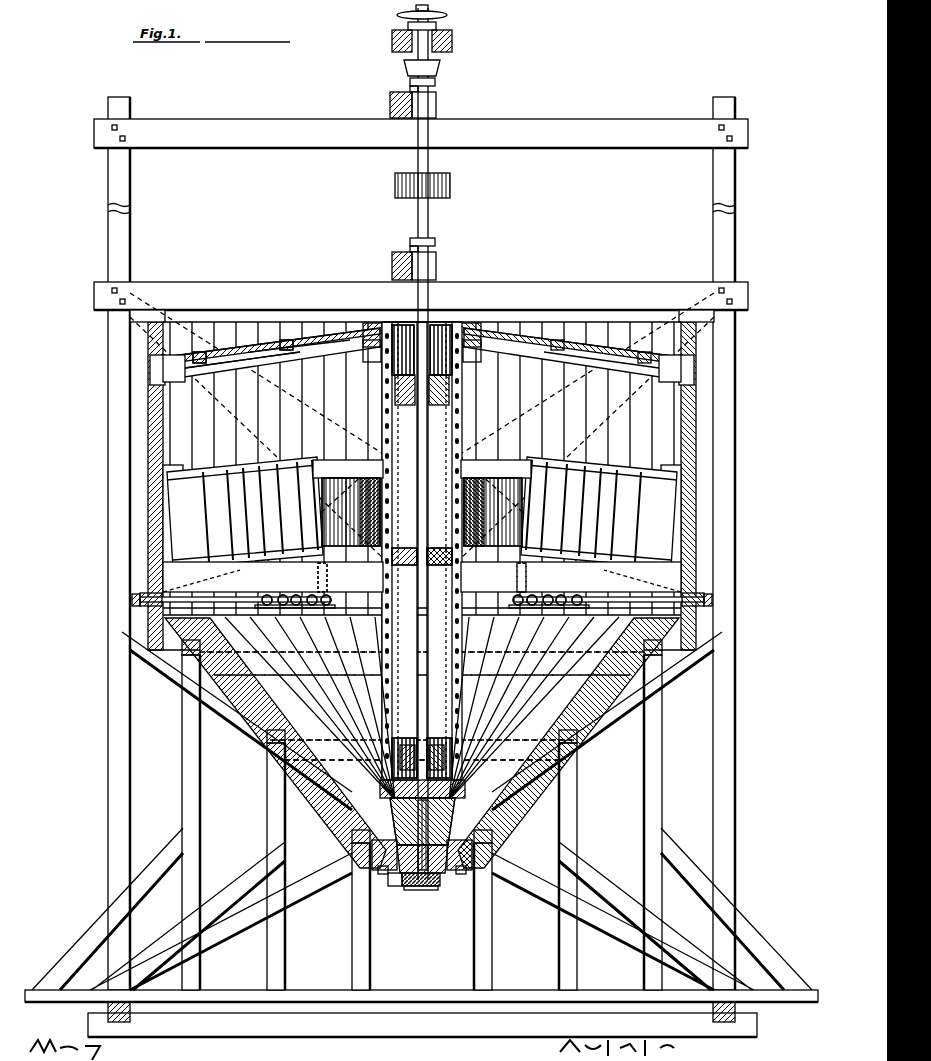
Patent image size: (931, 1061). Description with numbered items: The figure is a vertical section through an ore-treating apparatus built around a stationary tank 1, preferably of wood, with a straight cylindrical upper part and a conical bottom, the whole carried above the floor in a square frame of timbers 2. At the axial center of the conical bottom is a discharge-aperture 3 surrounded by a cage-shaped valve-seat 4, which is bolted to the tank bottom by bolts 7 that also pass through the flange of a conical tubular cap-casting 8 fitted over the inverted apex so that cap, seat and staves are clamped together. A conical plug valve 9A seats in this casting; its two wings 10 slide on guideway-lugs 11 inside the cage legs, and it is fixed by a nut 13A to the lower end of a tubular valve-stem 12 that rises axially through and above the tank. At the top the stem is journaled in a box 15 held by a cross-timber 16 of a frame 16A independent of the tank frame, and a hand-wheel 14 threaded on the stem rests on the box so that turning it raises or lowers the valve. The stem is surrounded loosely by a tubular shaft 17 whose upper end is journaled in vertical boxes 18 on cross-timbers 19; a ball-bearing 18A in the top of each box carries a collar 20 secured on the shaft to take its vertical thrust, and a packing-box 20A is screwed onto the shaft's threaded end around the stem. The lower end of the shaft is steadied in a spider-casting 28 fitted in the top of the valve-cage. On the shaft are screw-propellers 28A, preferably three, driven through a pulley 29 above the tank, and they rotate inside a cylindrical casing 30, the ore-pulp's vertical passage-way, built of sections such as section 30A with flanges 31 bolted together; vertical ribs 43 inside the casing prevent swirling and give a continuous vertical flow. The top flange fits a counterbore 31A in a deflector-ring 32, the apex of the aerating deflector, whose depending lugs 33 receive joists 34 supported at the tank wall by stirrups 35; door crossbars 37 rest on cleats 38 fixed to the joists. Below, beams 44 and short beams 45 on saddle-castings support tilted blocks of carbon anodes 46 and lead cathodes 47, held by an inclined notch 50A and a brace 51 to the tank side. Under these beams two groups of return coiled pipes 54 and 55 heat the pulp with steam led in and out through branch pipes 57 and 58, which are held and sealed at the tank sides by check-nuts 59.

The stationary tank 1 is at (700, 517).
The frame of timbers 2 is at (650, 807).
The discharge-aperture 3 is at (393, 886).
The valve-seat 4 is at (470, 840).
The bolts 7 is at (383, 874).
The conical tubular cap-casting 8 is at (372, 858).
The valve 9A is at (425, 886).
The wings 10 is at (392, 812).
The guideway-lugs 11 is at (395, 825).
The valve-stem 12 is at (416, 797).
The nut 13A is at (418, 890).
The hand-wheel 14 is at (447, 15).
The box 15 is at (408, 27).
The cross-timber 16 is at (392, 45).
The frame 16A is at (584, 124).
The tubular shaft 17 is at (428, 297).
The boxes 18 is at (436, 102).
The ball-bearing 18A is at (410, 249).
The cross-timbers 19 is at (390, 102).
The collar 20 is at (435, 82).
The packing-box 20A is at (440, 70).
The spider-casting 28 is at (300, 770).
The screw-propellers 28A is at (455, 380).
The pulley 29 is at (450, 186).
The cylindrical casing 30 is at (385, 373).
The cylindrical section 30A is at (382, 630).
The flanges 31 is at (378, 328).
The counterbore 31A is at (492, 325).
The deflector-ring 32 is at (335, 328).
The depending lugs 33 is at (582, 326).
The joists 34 is at (322, 352).
The stirrups 35 is at (163, 362).
The depending crossbars 37 is at (200, 365).
The cleats 38 is at (255, 365).
The ribs 43 is at (422, 551).
The beams 44 is at (422, 577).
The short beams 45 is at (318, 577).
The anodes 46 is at (280, 468).
The cathodes 47 is at (215, 470).
The inclined notch 50A is at (422, 580).
The brace 51 is at (165, 483).
The return coiled pipes 54 is at (300, 606).
The return coiled pipes 55 is at (548, 606).
The branch pipe 57 is at (140, 598).
The branch pipe 58 is at (704, 601).
The check-nuts 59 is at (135, 605).